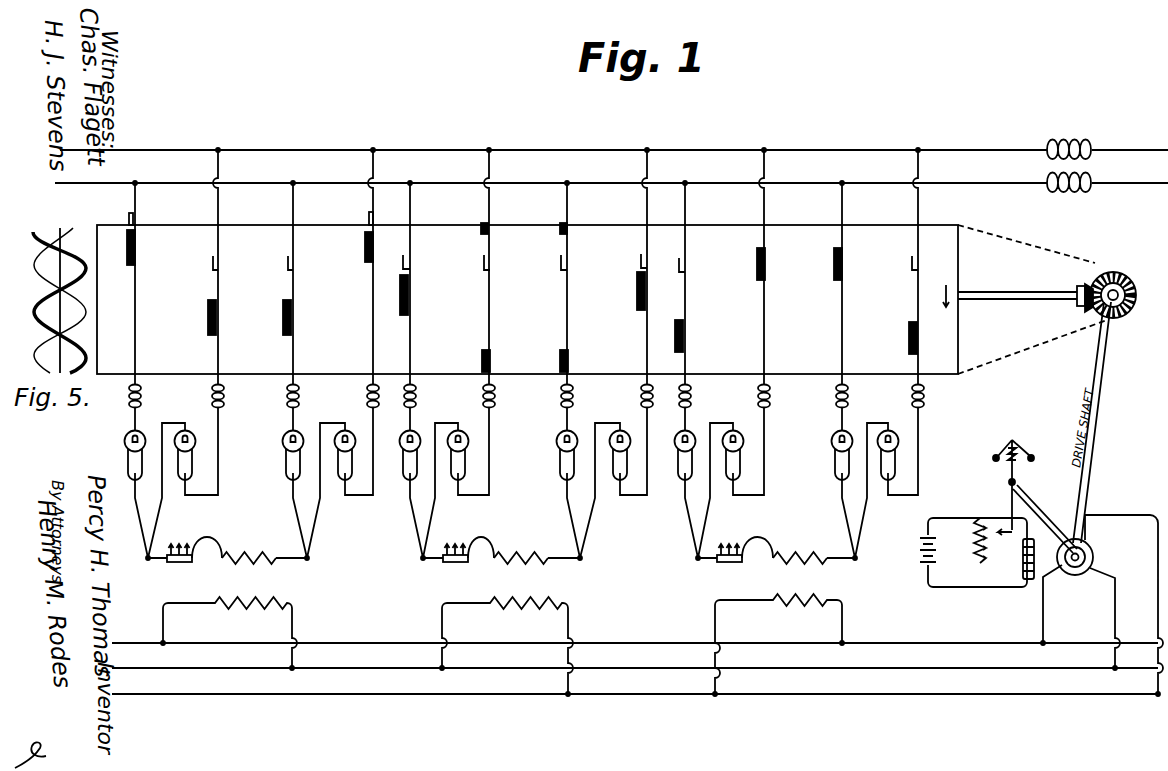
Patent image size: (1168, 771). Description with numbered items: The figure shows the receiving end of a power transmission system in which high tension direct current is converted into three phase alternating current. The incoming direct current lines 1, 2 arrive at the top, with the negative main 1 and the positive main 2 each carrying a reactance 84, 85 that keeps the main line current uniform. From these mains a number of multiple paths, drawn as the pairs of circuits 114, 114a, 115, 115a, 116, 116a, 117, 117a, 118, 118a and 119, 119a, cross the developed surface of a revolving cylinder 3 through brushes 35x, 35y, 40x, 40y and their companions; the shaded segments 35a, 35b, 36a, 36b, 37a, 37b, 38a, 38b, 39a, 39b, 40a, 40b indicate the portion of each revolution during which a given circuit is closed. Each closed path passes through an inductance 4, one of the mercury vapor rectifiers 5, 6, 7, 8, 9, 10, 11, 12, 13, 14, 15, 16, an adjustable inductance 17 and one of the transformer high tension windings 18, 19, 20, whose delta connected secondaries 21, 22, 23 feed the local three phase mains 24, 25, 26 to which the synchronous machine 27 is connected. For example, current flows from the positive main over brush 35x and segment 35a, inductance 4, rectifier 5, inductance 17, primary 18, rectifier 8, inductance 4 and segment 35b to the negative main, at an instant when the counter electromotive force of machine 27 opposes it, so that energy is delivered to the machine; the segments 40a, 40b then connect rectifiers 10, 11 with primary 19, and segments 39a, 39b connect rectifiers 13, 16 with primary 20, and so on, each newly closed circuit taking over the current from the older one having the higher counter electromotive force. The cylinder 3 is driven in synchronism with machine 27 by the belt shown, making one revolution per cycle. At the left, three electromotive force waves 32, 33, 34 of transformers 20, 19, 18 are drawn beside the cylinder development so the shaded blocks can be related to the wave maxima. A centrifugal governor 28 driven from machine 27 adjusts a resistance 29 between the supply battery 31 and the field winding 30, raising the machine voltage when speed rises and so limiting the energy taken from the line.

In FIG. 1, the incoming high tension direct current line 1 is at (614, 142).
In FIG. 1, the incoming high tension direct current line 2 is at (611, 194).
In FIG. 1, the revolving cylinder 3 is at (1120, 258).
In FIG. 1, the inductance 4 is at (931, 398).
In FIG. 1, the rectifier 5 is at (138, 465).
In FIG. 1, the rectifier 6 is at (190, 456).
In FIG. 1, the rectifier 7 is at (286, 465).
In FIG. 1, the rectifier 8 is at (347, 465).
In FIG. 1, the rectifier 9 is at (412, 463).
In FIG. 1, the rectifier 10 is at (460, 463).
In FIG. 1, the rectifier 11 is at (569, 463).
In FIG. 1, the rectifier 12 is at (622, 463).
In FIG. 1, the rectifier 13 is at (684, 463).
In FIG. 1, the rectifier 14 is at (735, 463).
In FIG. 1, the rectifier 15 is at (841, 463).
In FIG. 1, the rectifier 16 is at (897, 456).
In FIG. 1, the adjustable inductance 17 is at (179, 563).
In FIG. 1, the transformer high tension winding 18 is at (249, 547).
In FIG. 1, the transformer high tension winding 19 is at (521, 547).
In FIG. 1, the transformer high tension winding 20 is at (800, 547).
In FIG. 1, the delta-connected transformer secondary winding 21 is at (229, 633).
In FIG. 1, the delta-connected transformer secondary winding 22 is at (506, 646).
In FIG. 1, the delta-connected transformer secondary winding 23 is at (778, 645).
In FIG. 1, the local feed wire 24 is at (912, 637).
In FIG. 1, the local feed wire 25 is at (933, 663).
In FIG. 1, the local feed wire 26 is at (946, 689).
In FIG. 1, the three phase machine 27 is at (1086, 556).
In FIG. 1, the centrifugal governor 28 is at (1012, 474).
In FIG. 1, the resistance 29 is at (965, 540).
In FIG. 1, the field winding 30 is at (1022, 572).
In FIG. 1, the supply battery 31 is at (915, 550).
In FIG. 5, the electromotive force 32 is at (44, 348).
In FIG. 5, the electromotive force 33 is at (45, 291).
In FIG. 5, the electromotive force 34 is at (40, 242).
In FIG. 1, the brush 35x is at (129, 232).
In FIG. 1, the brush 35y is at (373, 222).
In FIG. 1, the segment 35a is at (148, 247).
In FIG. 1, the segment 35b is at (365, 245).
In FIG. 1, the shaded block 36a is at (765, 266).
In FIG. 1, the shaded block 36b is at (842, 266).
In FIG. 1, the shaded block 37a is at (426, 285).
In FIG. 1, the shaded block 37b is at (645, 290).
In FIG. 1, the shaded block 38a is at (216, 318).
In FIG. 1, the shaded block 38b is at (291, 318).
In FIG. 1, the segment 39a is at (683, 340).
In FIG. 1, the segment 39b is at (892, 305).
In FIG. 1, the brush 40x is at (481, 230).
In FIG. 1, the brush 40y is at (560, 268).
In FIG. 1, the segment 40a is at (488, 258).
In FIG. 1, the segment 40b is at (568, 233).
In FIG. 1, the reactance 84 is at (1069, 139).
In FIG. 1, the reactance 85 is at (1069, 196).
In FIG. 1, the circuit 114 is at (137, 205).
In FIG. 1, the circuit 114a is at (375, 196).
In FIG. 1, the circuit 115 is at (569, 205).
In FIG. 1, the circuit 115a is at (491, 196).
In FIG. 1, the circuit 116 is at (687, 205).
In FIG. 1, the circuit 116a is at (920, 196).
In FIG. 1, the circuit 117 is at (295, 205).
In FIG. 1, the circuit 117a is at (220, 196).
In FIG. 1, the circuit 118 is at (412, 205).
In FIG. 1, the circuit 118a is at (649, 196).
In FIG. 1, the circuit 119 is at (844, 205).
In FIG. 1, the circuit 119a is at (766, 196).